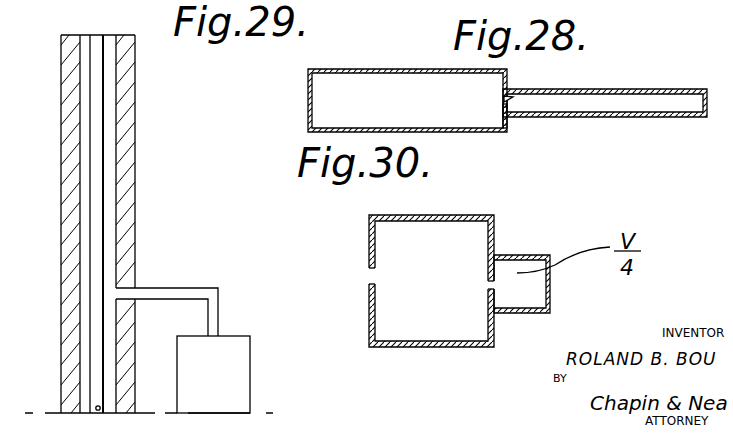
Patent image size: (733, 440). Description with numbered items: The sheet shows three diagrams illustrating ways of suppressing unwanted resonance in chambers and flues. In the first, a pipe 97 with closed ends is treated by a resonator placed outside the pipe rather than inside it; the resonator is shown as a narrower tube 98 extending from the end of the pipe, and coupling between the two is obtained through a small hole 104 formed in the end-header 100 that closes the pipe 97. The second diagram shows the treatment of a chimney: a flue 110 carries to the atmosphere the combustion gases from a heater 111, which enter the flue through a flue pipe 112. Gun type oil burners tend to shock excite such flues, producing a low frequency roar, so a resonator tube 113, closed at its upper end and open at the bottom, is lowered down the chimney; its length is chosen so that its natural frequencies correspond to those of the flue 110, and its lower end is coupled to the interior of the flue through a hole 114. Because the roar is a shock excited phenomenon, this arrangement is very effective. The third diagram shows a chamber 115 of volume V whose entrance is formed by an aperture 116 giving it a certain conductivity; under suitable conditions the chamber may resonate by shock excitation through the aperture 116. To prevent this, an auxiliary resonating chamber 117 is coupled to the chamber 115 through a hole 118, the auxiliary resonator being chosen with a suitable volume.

In FIG. 28, the pipe 97 is at (380, 70).
In FIG. 28, the inner tube 98 is at (612, 92).
In FIG. 28, the end-header 100 is at (507, 120).
In FIG. 28, the small hole 104 is at (505, 100).
In FIG. 29, the flue 110 is at (110, 173).
In FIG. 29, the heater 111 is at (246, 364).
In FIG. 29, the flue pipe 112 is at (172, 292).
In FIG. 29, the resonator tube 113 is at (98, 106).
In FIG. 29, the hole 114 is at (97, 407).
In FIG. 30, the chamber 115 is at (430, 215).
In FIG. 30, the aperture 116 is at (369, 279).
In FIG. 30, the auxiliary resonating chamber 117 is at (516, 257).
In FIG. 30, the hole 118 is at (494, 284).